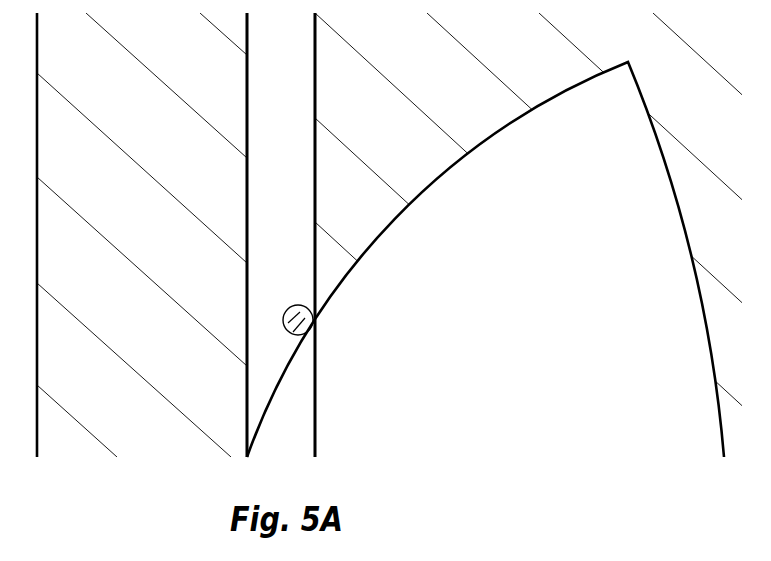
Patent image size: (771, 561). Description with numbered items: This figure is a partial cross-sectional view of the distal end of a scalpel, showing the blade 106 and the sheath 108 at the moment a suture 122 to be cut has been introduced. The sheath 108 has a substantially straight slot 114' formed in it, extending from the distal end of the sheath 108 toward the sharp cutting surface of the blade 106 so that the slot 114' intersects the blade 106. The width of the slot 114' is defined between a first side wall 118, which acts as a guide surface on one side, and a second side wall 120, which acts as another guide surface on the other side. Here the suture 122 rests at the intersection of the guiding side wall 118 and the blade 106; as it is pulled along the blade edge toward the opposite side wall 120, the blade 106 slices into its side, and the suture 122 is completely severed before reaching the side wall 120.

The blade 106 is at (538, 313).
The sheath 108 is at (443, 79).
The slot 114' is at (281, 235).
The first side wall 118 is at (315, 138).
The second side wall 120 is at (247, 234).
The suture 122 is at (310, 317).